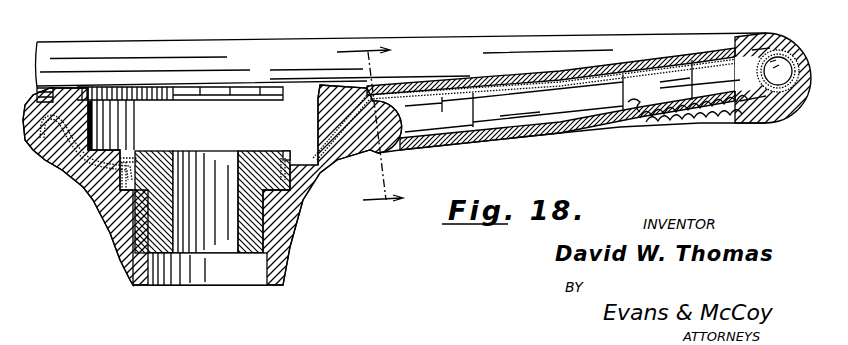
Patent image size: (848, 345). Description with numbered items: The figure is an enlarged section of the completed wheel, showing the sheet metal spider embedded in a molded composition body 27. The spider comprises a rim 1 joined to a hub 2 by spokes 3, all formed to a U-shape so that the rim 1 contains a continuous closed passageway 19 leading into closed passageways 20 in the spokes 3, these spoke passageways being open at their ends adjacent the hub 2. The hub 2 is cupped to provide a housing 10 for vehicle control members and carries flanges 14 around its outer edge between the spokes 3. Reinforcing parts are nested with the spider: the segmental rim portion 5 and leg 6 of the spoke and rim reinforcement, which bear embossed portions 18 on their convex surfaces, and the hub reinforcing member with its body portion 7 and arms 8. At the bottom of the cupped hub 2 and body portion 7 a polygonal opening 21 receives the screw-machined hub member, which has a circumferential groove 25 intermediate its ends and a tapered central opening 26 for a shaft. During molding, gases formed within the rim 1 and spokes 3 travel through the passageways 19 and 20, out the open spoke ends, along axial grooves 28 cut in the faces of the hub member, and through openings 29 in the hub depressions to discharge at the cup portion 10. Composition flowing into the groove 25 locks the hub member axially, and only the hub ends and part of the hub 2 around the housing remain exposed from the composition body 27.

The rim 1 is at (786, 42).
The hub 2 is at (73, 86).
The spokes 3 is at (557, 86).
The segmental rim portion 5 is at (788, 108).
The leg 6 is at (642, 120).
The body portion 7 is at (95, 185).
The arms 8 is at (438, 97).
The housing 10 is at (180, 118).
The flanges 14 is at (36, 150).
The embossed portions 18 is at (692, 60).
The rim passageway 19 is at (757, 50).
The spoke passageways 20 is at (606, 98).
The opening 21 is at (353, 132).
The circumferential groove 25 is at (250, 255).
The tapered central opening 26 is at (205, 202).
The composition body 27 is at (418, 33).
The axial grooves 28 is at (160, 151).
The openings 29 is at (300, 151).